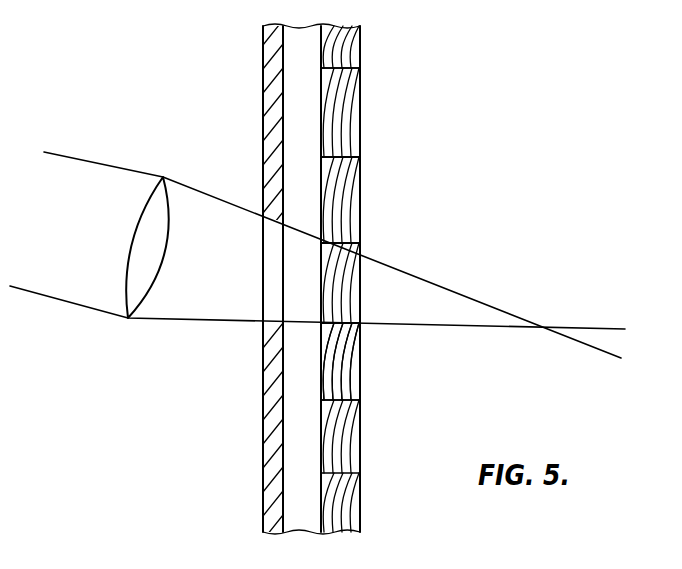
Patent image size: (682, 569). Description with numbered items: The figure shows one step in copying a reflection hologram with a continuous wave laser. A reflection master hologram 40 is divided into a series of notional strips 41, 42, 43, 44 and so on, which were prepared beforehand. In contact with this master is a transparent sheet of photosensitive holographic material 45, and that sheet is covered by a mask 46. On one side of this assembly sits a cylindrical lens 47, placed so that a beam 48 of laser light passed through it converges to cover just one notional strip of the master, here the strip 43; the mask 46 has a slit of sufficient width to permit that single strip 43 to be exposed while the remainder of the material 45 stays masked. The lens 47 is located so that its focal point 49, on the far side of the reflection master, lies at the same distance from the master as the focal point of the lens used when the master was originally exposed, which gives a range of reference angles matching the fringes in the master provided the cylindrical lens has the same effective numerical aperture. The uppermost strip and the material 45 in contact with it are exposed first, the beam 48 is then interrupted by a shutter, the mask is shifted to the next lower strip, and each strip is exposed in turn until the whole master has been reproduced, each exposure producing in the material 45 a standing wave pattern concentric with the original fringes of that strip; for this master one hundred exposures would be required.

The reflection master hologram 40 is at (362, 37).
The notional strip 41 is at (340, 113).
The notional strip 42 is at (342, 205).
The notional strip 43 is at (343, 292).
The notional strip 44 is at (343, 370).
The photosensitive holographic material 45 is at (297, 480).
The mask 46 is at (272, 412).
The cylindrical lens 47 is at (145, 247).
The beam 48 is at (97, 158).
The focal point 49 is at (548, 327).